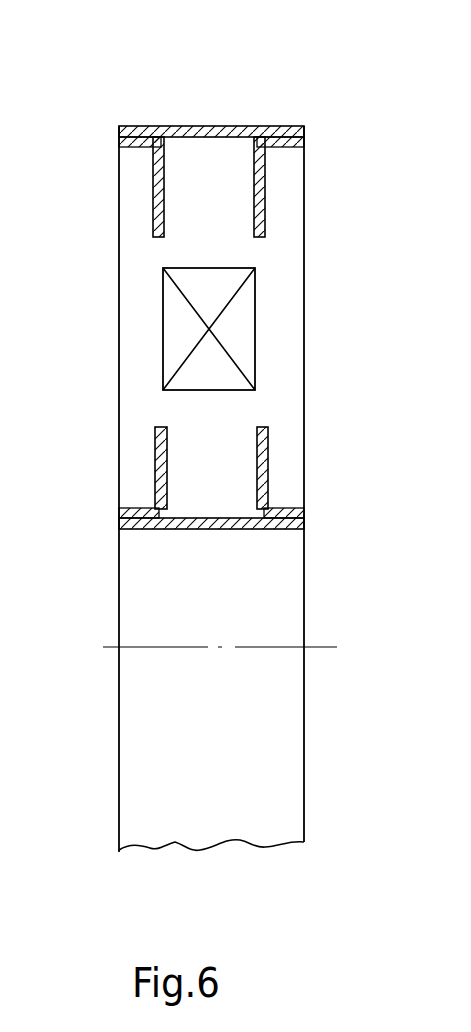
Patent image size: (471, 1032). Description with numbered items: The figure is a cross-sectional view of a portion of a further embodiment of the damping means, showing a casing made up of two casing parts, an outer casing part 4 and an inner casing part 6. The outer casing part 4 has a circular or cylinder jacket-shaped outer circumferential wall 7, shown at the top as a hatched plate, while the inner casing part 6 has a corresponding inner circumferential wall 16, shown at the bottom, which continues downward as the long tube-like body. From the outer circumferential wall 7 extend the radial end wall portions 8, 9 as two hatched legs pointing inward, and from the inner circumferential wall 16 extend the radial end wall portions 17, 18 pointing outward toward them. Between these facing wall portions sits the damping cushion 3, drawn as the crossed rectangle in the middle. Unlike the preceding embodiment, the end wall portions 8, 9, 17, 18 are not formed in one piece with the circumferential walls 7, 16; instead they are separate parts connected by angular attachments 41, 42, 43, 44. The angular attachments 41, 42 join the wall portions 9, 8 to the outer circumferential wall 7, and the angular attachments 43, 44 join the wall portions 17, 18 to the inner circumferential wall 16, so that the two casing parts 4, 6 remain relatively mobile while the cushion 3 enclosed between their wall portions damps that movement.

The damping cushion 3 is at (170, 333).
The outer casing part 4 is at (306, 117).
The inner casing part 6 is at (316, 535).
The outer circumferential wall 7 is at (183, 126).
The front wall portion 8 is at (268, 214).
The front wall portion 9 is at (155, 212).
The inner circumferential wall 16 is at (211, 489).
The wall portion 17 is at (157, 452).
The wall portion 18 is at (270, 450).
The angular attachment 41 is at (137, 150).
The angular attachment 42 is at (298, 150).
The angular attachment 43 is at (135, 510).
The angular attachment 44 is at (290, 508).